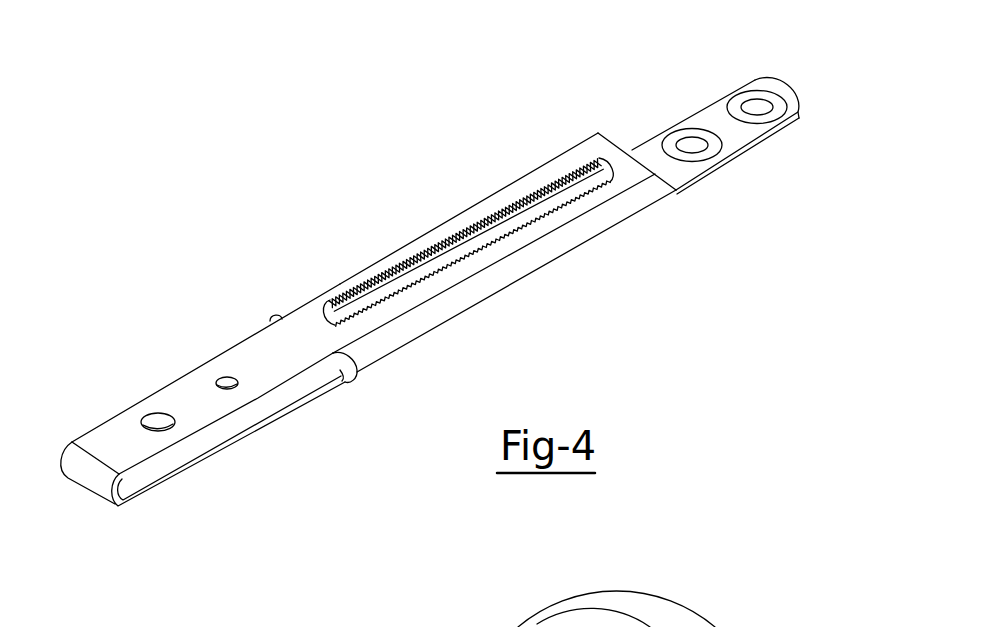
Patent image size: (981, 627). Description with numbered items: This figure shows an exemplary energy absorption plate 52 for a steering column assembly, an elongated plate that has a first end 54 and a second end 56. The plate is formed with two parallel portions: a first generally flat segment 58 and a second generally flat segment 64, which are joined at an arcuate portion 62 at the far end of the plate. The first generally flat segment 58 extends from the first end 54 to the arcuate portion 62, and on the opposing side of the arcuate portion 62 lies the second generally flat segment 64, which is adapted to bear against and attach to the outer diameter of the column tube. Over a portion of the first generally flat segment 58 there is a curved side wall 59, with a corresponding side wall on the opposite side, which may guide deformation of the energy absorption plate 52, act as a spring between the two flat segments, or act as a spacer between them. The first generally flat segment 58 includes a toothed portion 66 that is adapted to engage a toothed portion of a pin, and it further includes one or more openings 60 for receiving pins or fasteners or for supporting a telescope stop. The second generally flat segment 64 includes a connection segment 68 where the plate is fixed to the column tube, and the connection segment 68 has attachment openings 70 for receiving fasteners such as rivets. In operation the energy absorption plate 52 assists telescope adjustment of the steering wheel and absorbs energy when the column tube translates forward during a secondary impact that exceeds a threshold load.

The energy absorption plate 52 is at (172, 202).
The first end 54 is at (620, 138).
The second end 56 is at (795, 99).
The first generally flat segment 58 is at (303, 333).
The curved side wall 59 is at (490, 290).
The openings 60 is at (159, 423).
The arcuate portion 62 is at (90, 478).
The second generally flat segment 64 is at (268, 427).
The toothed portion 66 is at (438, 247).
The connection segment 68 is at (746, 151).
The attachment openings 70 is at (689, 138).